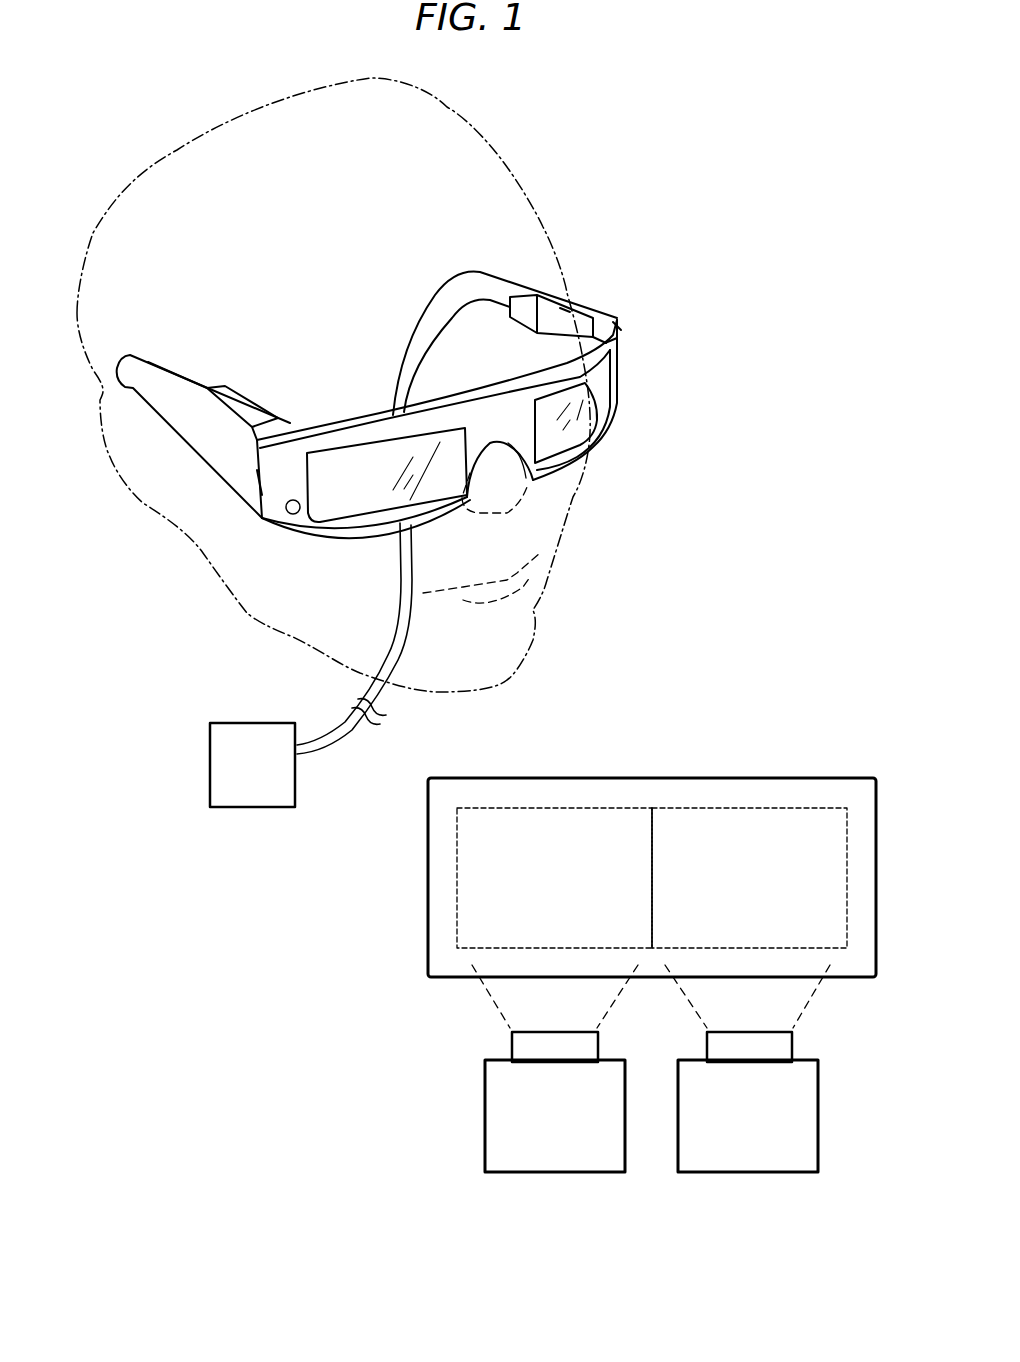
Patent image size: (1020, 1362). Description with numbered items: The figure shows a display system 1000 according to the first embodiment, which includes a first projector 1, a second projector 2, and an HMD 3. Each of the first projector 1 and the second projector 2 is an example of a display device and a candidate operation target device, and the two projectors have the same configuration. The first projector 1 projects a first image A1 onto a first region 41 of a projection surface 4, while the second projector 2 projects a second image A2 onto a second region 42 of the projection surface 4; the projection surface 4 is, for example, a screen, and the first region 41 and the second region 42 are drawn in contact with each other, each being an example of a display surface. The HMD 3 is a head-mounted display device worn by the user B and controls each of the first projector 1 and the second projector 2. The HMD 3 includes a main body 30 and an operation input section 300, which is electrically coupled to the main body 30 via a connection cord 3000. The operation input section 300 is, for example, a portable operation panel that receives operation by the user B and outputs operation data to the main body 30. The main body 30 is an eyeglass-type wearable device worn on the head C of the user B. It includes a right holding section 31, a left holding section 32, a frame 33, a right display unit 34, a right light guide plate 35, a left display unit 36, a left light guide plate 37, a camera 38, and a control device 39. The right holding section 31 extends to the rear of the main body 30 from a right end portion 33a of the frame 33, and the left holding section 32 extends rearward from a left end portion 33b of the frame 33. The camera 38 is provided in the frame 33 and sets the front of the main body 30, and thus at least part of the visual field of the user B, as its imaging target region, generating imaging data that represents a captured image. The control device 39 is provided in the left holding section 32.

The display system 1000 is at (705, 141).
The first projector 1 is at (558, 1177).
The second projector 2 is at (755, 1177).
The HMD 3 is at (153, 594).
The projection surface 4 is at (823, 777).
The first region 41 is at (457, 855).
The second region 42 is at (847, 855).
The first image A1 is at (560, 817).
The second image A2 is at (755, 817).
The main body 30 is at (353, 400).
The right holding section 31 is at (140, 343).
The left holding section 32 is at (535, 281).
The frame 33 is at (600, 340).
The right end portion 33a is at (257, 482).
The left end portion 33b is at (622, 332).
The right display unit 34 is at (247, 407).
The right light guide plate 35 is at (364, 510).
The left display unit 36 is at (558, 310).
The left light guide plate 37 is at (600, 412).
The camera 38 is at (292, 517).
The control device 39 is at (517, 320).
The operation input section 300 is at (263, 722).
The connection cord 3000 is at (340, 747).
The user B is at (573, 522).
The head C is at (93, 281).